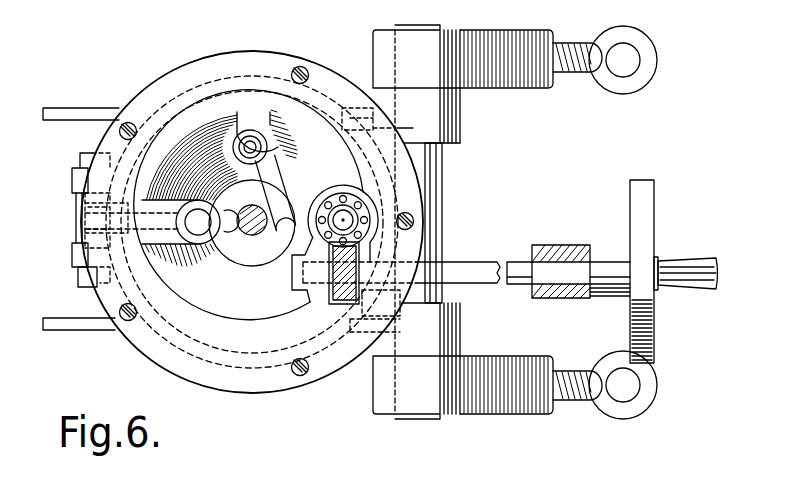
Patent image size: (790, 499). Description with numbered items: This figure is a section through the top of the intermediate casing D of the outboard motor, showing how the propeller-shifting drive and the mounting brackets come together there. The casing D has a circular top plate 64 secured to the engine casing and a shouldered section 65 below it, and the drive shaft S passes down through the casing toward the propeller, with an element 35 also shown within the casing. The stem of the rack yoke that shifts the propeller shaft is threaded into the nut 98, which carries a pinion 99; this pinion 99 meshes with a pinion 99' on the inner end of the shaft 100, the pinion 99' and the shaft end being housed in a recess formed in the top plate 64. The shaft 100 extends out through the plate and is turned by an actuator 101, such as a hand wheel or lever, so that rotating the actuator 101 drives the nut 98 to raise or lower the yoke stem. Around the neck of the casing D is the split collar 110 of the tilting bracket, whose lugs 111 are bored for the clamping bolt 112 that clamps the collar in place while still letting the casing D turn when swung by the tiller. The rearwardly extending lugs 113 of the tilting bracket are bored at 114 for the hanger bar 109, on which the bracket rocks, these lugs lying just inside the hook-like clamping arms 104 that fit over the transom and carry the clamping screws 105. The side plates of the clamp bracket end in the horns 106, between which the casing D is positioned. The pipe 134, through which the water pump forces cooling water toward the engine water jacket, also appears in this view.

The circular top plate 64 is at (192, 70).
The shouldered section 65 is at (229, 80).
The split collar 110 is at (262, 84).
The casing D is at (233, 317).
The lever arm 35 is at (273, 192).
The pipe 134 is at (229, 230).
The drive shaft S is at (255, 227).
The nut 98 is at (352, 213).
The pinion 99 is at (343, 203).
The pinion 99' is at (320, 279).
The shaft 100 is at (435, 271).
The actuator 101 is at (647, 222).
The clamping arms 104 is at (493, 50).
The clamping screws 105 is at (578, 40).
The horns 106 is at (73, 112).
The hanger bar 109 is at (435, 172).
The lugs 111 is at (72, 178).
The clamping bolt 112 is at (78, 272).
The rearwardly extending lugs 113 is at (461, 117).
The bore 114 is at (462, 128).